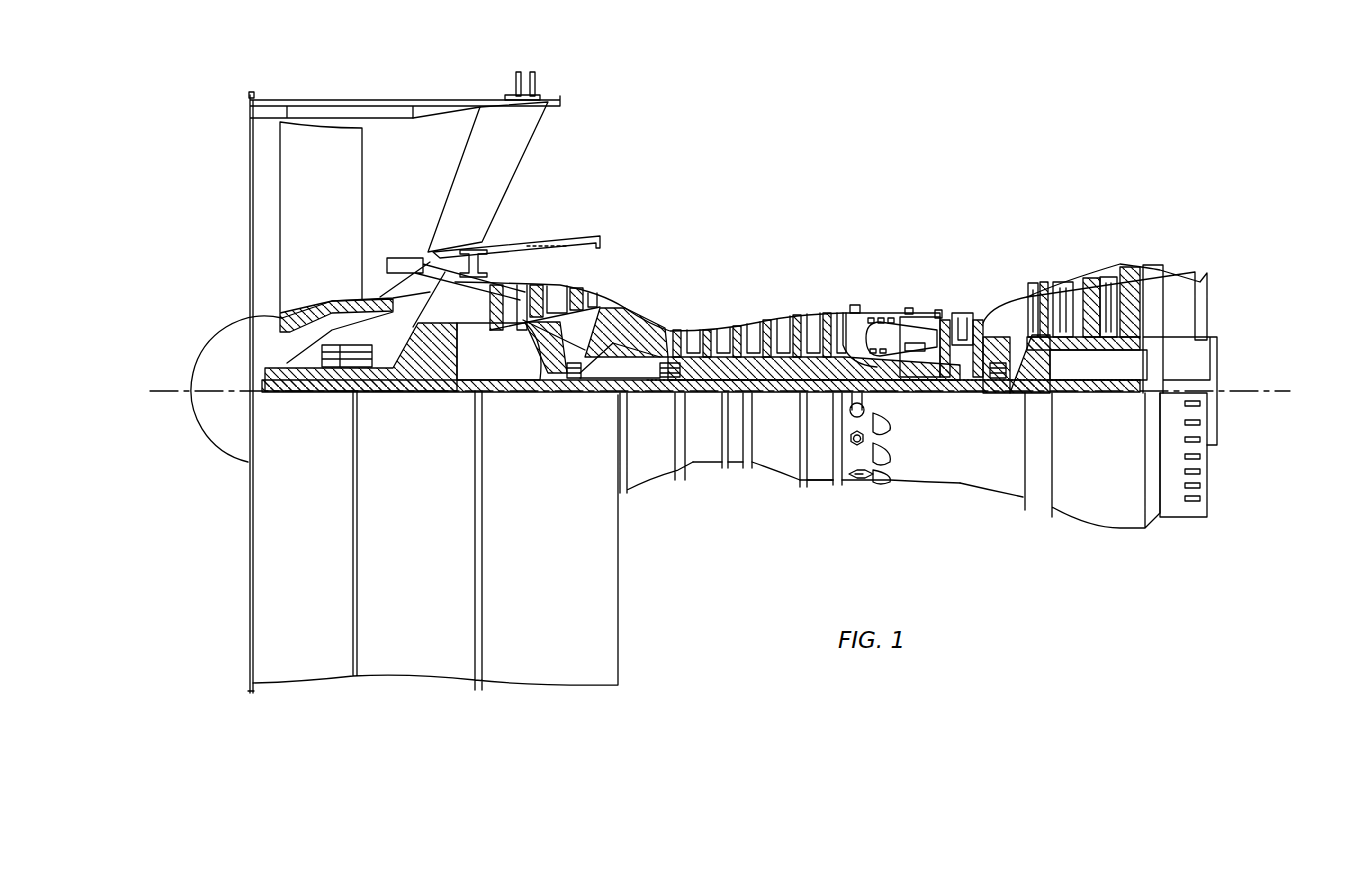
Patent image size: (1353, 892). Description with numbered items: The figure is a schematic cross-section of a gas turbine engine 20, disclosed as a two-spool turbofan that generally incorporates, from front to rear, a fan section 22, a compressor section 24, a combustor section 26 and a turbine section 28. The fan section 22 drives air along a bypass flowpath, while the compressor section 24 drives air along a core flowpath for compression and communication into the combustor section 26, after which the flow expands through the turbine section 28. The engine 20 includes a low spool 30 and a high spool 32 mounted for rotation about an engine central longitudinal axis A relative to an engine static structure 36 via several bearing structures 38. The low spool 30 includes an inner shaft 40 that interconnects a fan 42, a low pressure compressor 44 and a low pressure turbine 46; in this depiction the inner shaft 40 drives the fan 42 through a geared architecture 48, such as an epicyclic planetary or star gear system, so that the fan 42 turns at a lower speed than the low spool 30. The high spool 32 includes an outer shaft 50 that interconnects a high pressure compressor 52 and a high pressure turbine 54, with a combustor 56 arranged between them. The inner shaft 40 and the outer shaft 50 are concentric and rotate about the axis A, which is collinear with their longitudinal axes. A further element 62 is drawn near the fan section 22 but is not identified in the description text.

The gas turbine engine 20 is at (933, 134).
The fan section 22 is at (478, 78).
The compressor section 24 is at (485, 207).
The combustor section 26 is at (948, 207).
The turbine section 28 is at (1155, 207).
The low spool 30 is at (780, 398).
The high spool 32 is at (817, 337).
The engine static structure 36 is at (823, 488).
The bearing structures 38 is at (328, 393).
The inner shaft 40 is at (647, 397).
The fan 42 is at (327, 229).
The low pressure compressor 44 is at (552, 297).
The low pressure turbine 46 is at (1090, 278).
The geared architecture 48 is at (437, 393).
The outer shaft 50 is at (897, 385).
The high pressure compressor 52 is at (763, 363).
The high pressure turbine 54 is at (960, 313).
The combustor 56 is at (895, 340).
The fan exit guide vane 62 is at (480, 107).
The engine central longitudinal axis A is at (1288, 391).